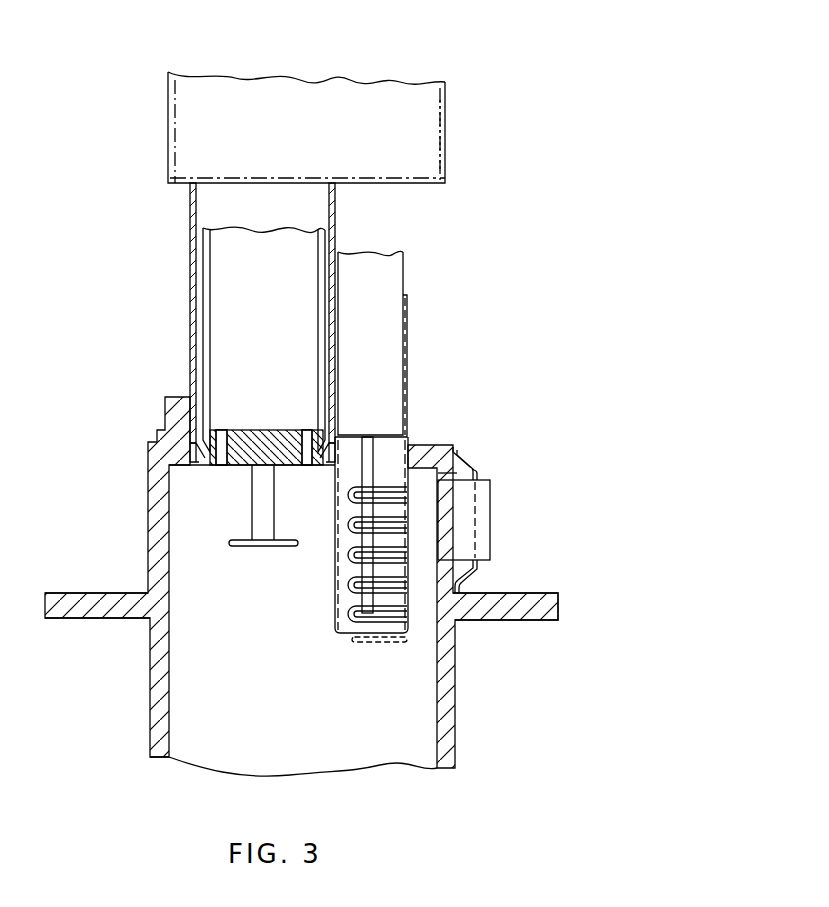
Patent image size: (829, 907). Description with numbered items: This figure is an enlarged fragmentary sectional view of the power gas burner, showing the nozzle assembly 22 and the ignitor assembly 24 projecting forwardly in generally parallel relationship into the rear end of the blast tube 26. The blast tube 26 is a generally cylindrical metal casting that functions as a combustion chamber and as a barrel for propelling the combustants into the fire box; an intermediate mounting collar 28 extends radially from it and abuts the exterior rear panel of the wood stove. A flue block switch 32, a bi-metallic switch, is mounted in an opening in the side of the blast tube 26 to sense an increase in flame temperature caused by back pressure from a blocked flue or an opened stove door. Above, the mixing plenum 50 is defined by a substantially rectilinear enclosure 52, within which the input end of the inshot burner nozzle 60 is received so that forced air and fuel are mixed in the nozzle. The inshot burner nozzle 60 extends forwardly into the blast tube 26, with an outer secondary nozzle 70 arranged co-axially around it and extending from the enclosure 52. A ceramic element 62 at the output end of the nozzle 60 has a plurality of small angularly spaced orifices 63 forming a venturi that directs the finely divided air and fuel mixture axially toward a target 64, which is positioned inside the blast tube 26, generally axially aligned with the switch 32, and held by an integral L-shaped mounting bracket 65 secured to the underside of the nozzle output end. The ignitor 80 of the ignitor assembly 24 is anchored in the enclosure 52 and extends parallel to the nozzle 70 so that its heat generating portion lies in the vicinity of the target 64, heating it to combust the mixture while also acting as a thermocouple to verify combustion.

The nozzle assembly 22 is at (153, 336).
The ignitor assembly 24 is at (425, 376).
The blast tube 26 is at (450, 718).
The mounting collar 28 is at (540, 598).
The flue block switch 32 is at (492, 520).
The mixing plenum 50 is at (347, 92).
The enclosure 52 is at (448, 112).
The inshot burner nozzle 60 is at (371, 326).
The ceramic element 62 is at (287, 446).
The orifices 63 is at (222, 458).
The target 64 is at (258, 548).
The mounting bracket 65 is at (258, 519).
The outer secondary nozzle 70 is at (190, 218).
The ignitor 80 is at (348, 598).